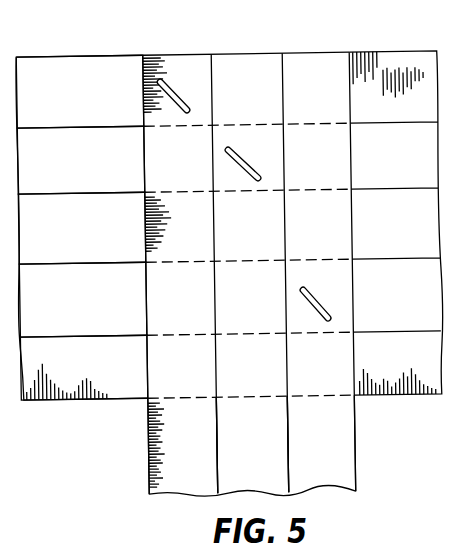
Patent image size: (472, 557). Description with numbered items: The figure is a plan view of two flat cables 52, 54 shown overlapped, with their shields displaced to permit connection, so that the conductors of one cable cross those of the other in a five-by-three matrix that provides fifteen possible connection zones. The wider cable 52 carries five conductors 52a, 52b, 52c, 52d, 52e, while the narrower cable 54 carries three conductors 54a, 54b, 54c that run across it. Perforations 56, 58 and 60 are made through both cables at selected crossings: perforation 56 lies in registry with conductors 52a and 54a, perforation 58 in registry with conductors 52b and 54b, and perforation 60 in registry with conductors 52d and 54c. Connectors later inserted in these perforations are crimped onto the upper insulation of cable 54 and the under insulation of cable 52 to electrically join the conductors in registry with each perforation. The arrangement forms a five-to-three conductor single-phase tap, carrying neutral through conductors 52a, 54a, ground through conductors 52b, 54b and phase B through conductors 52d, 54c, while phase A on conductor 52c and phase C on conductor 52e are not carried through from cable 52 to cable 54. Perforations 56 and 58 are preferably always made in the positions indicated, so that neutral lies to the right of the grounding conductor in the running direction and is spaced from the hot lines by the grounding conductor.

The flat cable 52 is at (121, 46).
The conductor 52a is at (91, 100).
The conductor 52b is at (90, 168).
The conductor 52c is at (98, 237).
The conductor 52d is at (93, 310).
The conductor 52e is at (99, 375).
The flat cable 54 is at (362, 452).
The conductor 54a is at (201, 450).
The conductor 54b is at (270, 451).
The conductor 54c is at (338, 452).
The perforation 56 is at (185, 94).
The perforation 58 is at (252, 168).
The perforation 60 is at (322, 309).